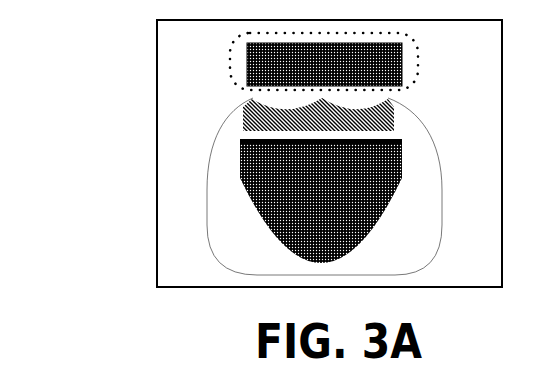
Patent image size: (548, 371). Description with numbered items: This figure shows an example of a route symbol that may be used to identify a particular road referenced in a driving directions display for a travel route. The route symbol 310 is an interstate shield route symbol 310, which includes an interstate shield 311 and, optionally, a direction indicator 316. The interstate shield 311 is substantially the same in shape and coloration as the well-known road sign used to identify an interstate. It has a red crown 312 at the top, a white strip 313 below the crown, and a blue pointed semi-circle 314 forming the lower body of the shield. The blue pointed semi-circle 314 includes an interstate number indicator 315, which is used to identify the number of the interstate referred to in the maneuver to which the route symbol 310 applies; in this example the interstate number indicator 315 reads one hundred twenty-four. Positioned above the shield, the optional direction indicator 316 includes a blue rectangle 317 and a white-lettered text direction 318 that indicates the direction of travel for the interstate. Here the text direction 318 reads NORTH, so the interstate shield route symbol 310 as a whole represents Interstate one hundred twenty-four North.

The interstate shield route symbol 310 is at (90, 177).
The interstate shield 311 is at (218, 130).
The red crown 312 is at (395, 116).
The white strip 313 is at (390, 136).
The blue pointed semi-circle 314 is at (402, 163).
The interstate number indicator 315 is at (400, 193).
The direction indicator 316 is at (228, 60).
The blue rectangle 317 is at (402, 62).
The text direction 318 is at (363, 55).